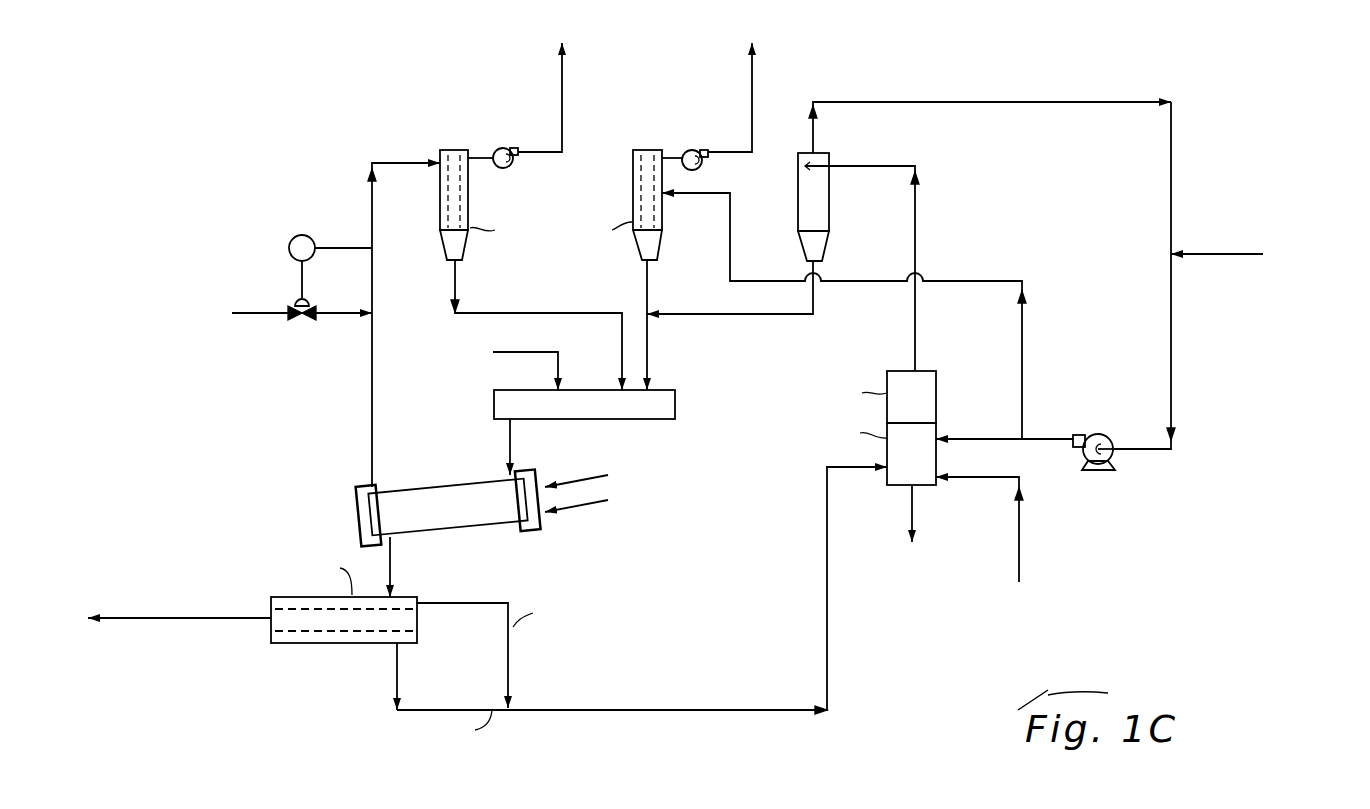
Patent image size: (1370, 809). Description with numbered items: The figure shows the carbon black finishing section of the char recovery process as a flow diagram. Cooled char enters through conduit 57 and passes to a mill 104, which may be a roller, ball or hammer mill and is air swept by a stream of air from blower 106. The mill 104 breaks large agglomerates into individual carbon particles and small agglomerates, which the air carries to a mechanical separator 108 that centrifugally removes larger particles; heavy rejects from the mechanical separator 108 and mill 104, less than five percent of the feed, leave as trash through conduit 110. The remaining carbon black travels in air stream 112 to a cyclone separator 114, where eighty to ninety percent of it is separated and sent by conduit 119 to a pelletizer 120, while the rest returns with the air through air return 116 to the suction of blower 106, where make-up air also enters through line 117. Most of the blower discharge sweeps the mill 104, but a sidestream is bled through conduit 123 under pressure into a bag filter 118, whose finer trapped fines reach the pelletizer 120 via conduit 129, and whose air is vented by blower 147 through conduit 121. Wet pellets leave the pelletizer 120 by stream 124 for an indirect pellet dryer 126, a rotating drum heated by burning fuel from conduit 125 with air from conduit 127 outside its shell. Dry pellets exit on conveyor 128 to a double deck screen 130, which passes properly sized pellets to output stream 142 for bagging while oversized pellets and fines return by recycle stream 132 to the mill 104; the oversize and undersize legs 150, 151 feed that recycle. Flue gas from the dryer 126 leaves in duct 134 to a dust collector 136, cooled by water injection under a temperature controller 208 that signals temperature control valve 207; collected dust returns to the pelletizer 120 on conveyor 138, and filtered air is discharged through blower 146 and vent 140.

The temperature controller 208 is at (302, 235).
The temperature control valve 207 is at (302, 322).
The duct 134 is at (372, 368).
The dust collector 136 is at (470, 186).
The blower 146 is at (503, 147).
The vent 140 is at (563, 103).
The bag filter 118 is at (632, 180).
The blower 147 is at (693, 148).
The conduit 121 is at (750, 93).
The cyclone separator 114 is at (830, 203).
The air return 116 is at (1033, 102).
The line 117 is at (1217, 254).
The air stream 112 is at (917, 208).
The conduit 123 is at (733, 212).
The conduit 119 is at (690, 318).
The conduit 129 is at (650, 275).
The conveyor 138 is at (543, 313).
The recycle stream 132 is at (527, 352).
The pelletizer 120 is at (677, 405).
The stream 124 is at (500, 427).
The indirect pellet dryer 126 is at (450, 483).
The conduit 127 is at (573, 480).
The conduit 125 is at (580, 507).
The conveyor 128 is at (392, 555).
The double deck screen 130 is at (337, 645).
The output stream 142 is at (222, 614).
The oversize pellets line 150 is at (442, 605).
The undersize pellets line 151 is at (445, 707).
The mechanical separator 108 is at (938, 378).
The mill 104 is at (938, 452).
The conduit 110 is at (914, 503).
The conduit 57 is at (1020, 512).
The blower 106 is at (1098, 434).